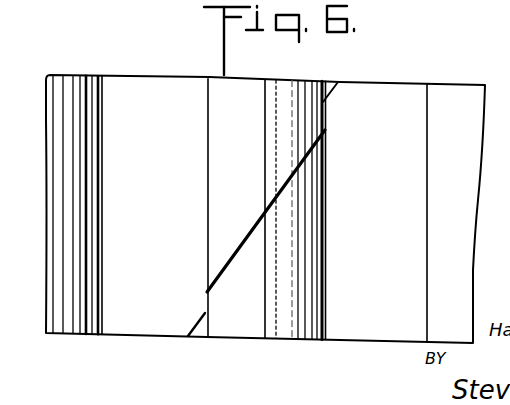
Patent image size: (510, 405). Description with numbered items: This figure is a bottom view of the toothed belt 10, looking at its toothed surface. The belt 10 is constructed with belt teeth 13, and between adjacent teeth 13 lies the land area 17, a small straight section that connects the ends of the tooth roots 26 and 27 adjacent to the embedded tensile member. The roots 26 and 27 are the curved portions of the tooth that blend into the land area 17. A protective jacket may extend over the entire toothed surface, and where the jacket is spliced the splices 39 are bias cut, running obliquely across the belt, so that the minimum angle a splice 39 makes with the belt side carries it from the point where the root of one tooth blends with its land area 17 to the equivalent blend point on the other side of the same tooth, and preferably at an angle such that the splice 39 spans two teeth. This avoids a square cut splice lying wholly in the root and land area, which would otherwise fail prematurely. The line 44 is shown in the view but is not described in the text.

The belt 10 is at (143, 103).
The belt teeth 13 is at (254, 148).
The land area 17 is at (405, 84).
The root 26 is at (327, 82).
The root 27 is at (197, 338).
The jacket splices 39 is at (279, 196).
The fold line 44 is at (262, 338).